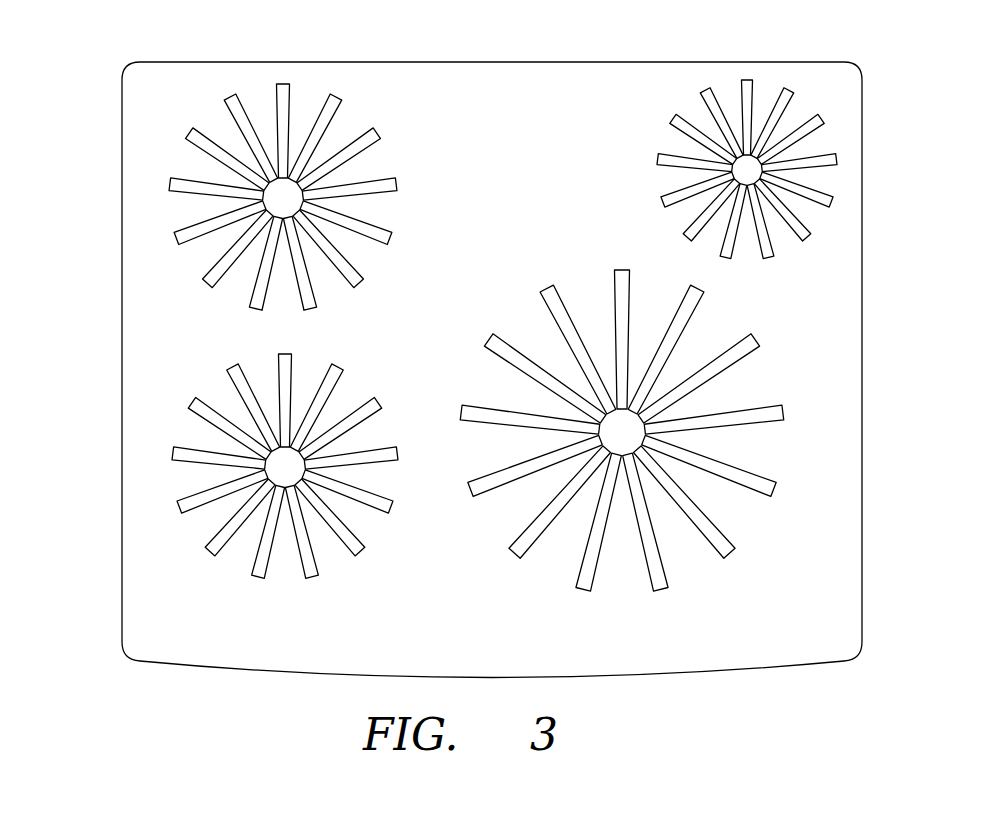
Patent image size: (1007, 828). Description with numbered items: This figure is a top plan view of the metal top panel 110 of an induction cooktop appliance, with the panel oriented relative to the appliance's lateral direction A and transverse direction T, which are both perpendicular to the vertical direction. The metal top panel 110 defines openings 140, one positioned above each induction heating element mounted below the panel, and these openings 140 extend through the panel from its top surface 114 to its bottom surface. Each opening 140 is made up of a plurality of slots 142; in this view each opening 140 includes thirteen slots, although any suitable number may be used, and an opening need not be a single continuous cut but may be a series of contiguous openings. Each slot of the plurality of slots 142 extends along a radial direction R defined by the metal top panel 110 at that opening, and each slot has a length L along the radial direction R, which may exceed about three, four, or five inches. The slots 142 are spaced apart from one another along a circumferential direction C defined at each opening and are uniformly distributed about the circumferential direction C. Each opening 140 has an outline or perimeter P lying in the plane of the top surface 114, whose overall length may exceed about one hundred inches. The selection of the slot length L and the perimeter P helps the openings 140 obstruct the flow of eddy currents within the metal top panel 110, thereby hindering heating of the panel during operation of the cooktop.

The metal top panel 110 is at (912, 142).
The top surface 114 is at (165, 610).
The openings 140 is at (503, 335).
The plurality of slots 142 is at (345, 90).
The transverse direction T is at (665, 25).
The lateral direction A is at (54, 218).
The radial direction R is at (226, 128).
The length L is at (215, 272).
The circumferential direction C is at (328, 309).
The perimeter P is at (302, 553).